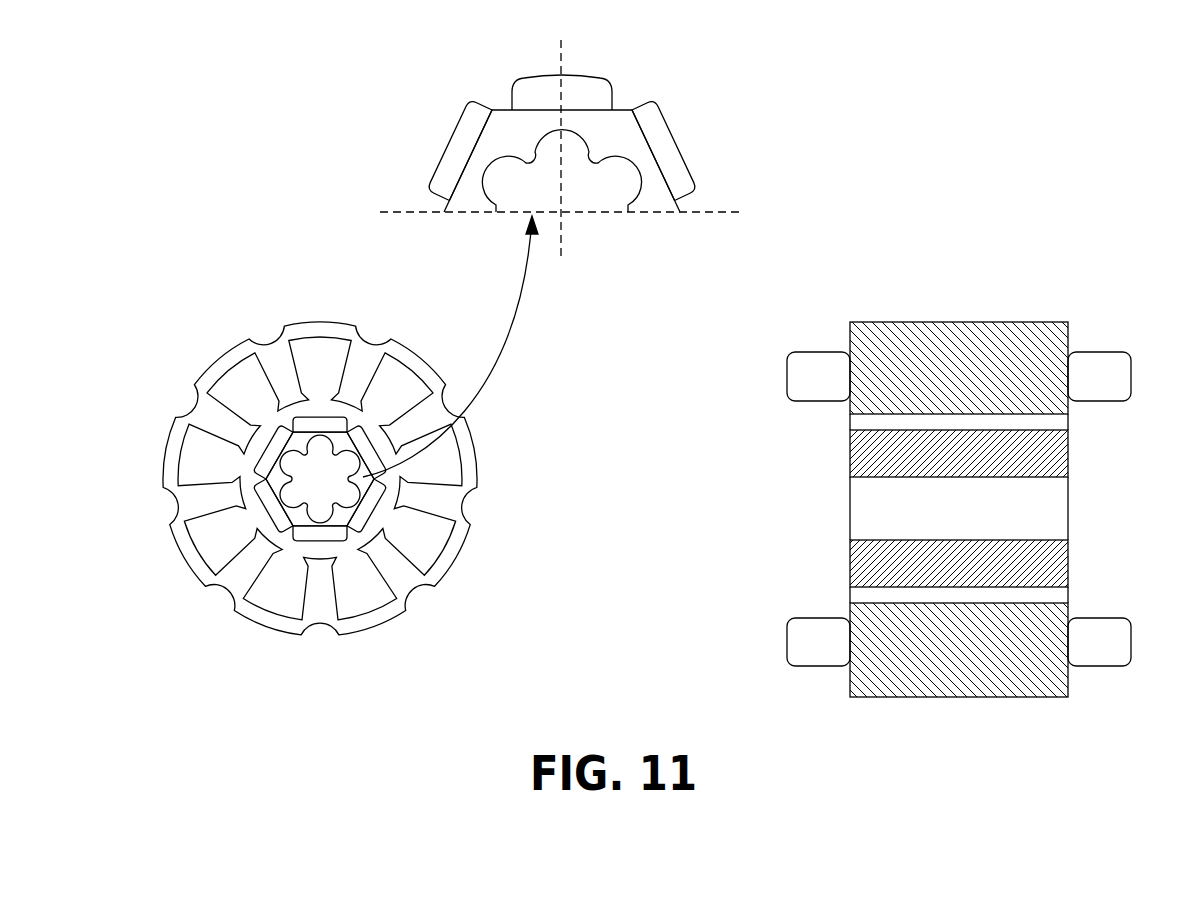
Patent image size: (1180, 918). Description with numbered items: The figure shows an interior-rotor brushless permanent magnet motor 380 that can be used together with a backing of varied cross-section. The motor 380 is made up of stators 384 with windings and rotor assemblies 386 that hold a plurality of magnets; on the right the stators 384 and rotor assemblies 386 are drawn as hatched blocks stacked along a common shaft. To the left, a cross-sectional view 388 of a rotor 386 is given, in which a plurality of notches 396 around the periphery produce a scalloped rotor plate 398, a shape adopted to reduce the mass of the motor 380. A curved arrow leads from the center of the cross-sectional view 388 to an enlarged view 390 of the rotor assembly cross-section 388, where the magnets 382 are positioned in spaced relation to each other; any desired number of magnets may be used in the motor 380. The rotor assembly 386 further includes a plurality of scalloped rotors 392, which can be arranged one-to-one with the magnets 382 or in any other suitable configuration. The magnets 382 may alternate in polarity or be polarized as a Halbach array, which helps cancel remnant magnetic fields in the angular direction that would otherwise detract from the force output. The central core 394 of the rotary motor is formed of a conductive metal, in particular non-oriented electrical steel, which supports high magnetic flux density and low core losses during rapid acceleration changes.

The interior-rotor brushless permanent magnet motor 380 is at (1098, 243).
The magnets 382 is at (600, 80).
The stators 384 is at (1005, 322).
The rotor assembly 386 is at (1068, 460).
The cross-sectional view of a rotor 388 is at (512, 426).
The enlarged view of the rotor assembly cross-section 390 is at (724, 86).
The scalloped rotors 392 is at (637, 167).
The central core 394 is at (585, 195).
The notches 396 is at (415, 593).
The scalloped rotor plate 398 is at (457, 552).